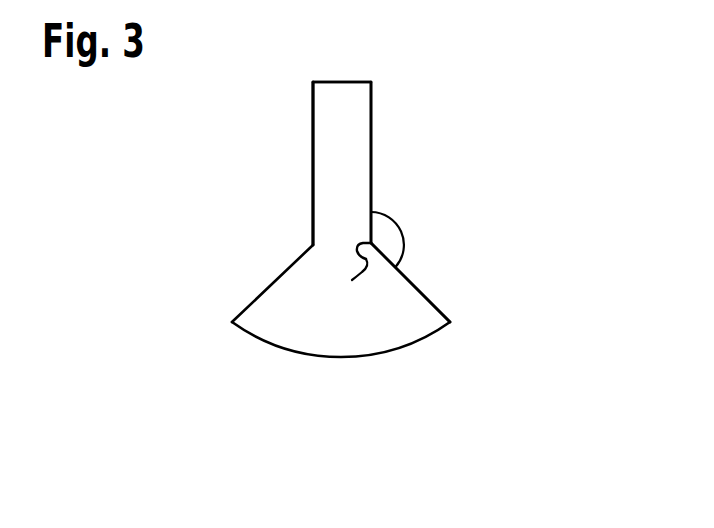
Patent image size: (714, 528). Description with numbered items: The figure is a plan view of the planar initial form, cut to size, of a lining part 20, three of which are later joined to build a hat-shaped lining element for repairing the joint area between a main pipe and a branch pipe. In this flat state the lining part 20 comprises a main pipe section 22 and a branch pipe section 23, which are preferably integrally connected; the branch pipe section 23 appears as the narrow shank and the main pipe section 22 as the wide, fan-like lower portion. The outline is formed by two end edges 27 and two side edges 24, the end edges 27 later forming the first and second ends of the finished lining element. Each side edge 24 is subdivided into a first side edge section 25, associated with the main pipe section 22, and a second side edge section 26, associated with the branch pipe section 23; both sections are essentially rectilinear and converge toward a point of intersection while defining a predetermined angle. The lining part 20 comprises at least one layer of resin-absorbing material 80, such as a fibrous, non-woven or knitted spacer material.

The lining part 20 is at (462, 128).
The main pipe section 22 is at (407, 292).
The branch pipe section 23 is at (353, 138).
The side edge 24 is at (213, 194).
The first side edge section 25 is at (277, 272).
The second side edge section 26 is at (313, 205).
The end edge 27 is at (347, 82).
The resin-absorbing layer 80 is at (318, 108).